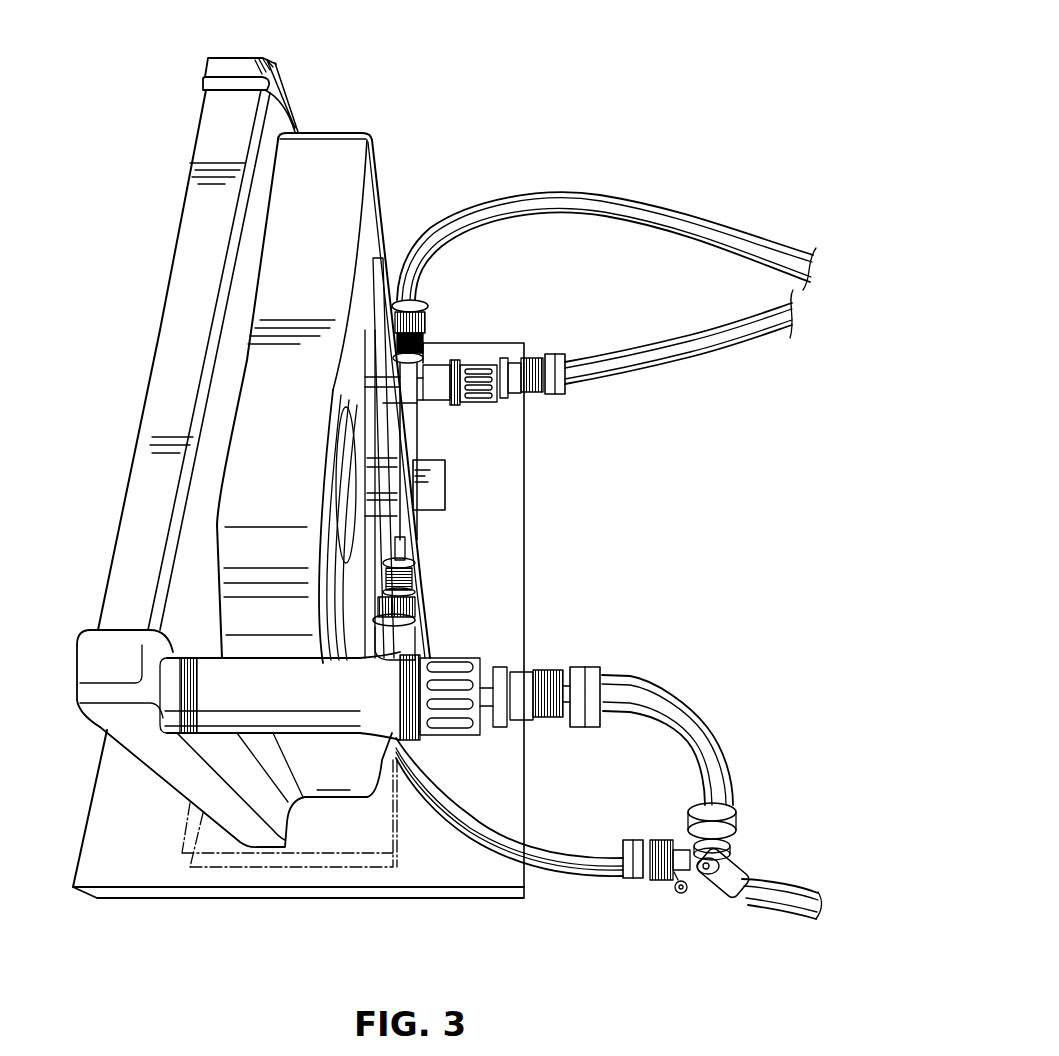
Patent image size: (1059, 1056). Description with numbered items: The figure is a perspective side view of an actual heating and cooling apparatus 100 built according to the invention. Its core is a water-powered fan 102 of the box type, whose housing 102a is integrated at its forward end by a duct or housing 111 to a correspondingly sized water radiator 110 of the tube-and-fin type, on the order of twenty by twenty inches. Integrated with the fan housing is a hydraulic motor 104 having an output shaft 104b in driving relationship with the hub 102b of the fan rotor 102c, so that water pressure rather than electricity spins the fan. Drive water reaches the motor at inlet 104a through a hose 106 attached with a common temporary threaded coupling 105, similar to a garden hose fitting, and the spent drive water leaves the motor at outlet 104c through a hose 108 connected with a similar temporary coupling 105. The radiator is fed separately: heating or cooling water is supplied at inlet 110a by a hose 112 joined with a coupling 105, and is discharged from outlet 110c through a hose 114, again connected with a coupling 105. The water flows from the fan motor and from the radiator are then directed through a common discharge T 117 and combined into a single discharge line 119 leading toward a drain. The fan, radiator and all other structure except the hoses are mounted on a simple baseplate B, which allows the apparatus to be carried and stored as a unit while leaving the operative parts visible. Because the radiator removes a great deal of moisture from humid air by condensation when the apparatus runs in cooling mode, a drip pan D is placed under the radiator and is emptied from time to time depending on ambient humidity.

The heating and cooling apparatus 100 is at (445, 126).
The water-powered fan 102 is at (345, 124).
The fan housing 102a is at (322, 170).
The hub of fan rotor 102b is at (327, 550).
The fan rotor 102c is at (355, 662).
The hydraulic motor 104 is at (403, 427).
The motor inlet 104a is at (420, 366).
The output shaft 104b is at (340, 482).
The motor outlet 104c is at (400, 555).
The temporary threaded coupling 105 is at (433, 328).
The hose 106 is at (638, 216).
The hose 108 is at (577, 857).
The water radiator 110 is at (188, 222).
The radiator inlet 110a is at (480, 367).
The radiator outlet 110c is at (452, 723).
The duct or housing 111 is at (267, 132).
The hose 112 is at (716, 352).
The hose 114 is at (692, 733).
The common discharge T 117 is at (738, 859).
The single discharge line 119 is at (790, 903).
The baseplate B is at (137, 868).
The drip pan D is at (315, 868).